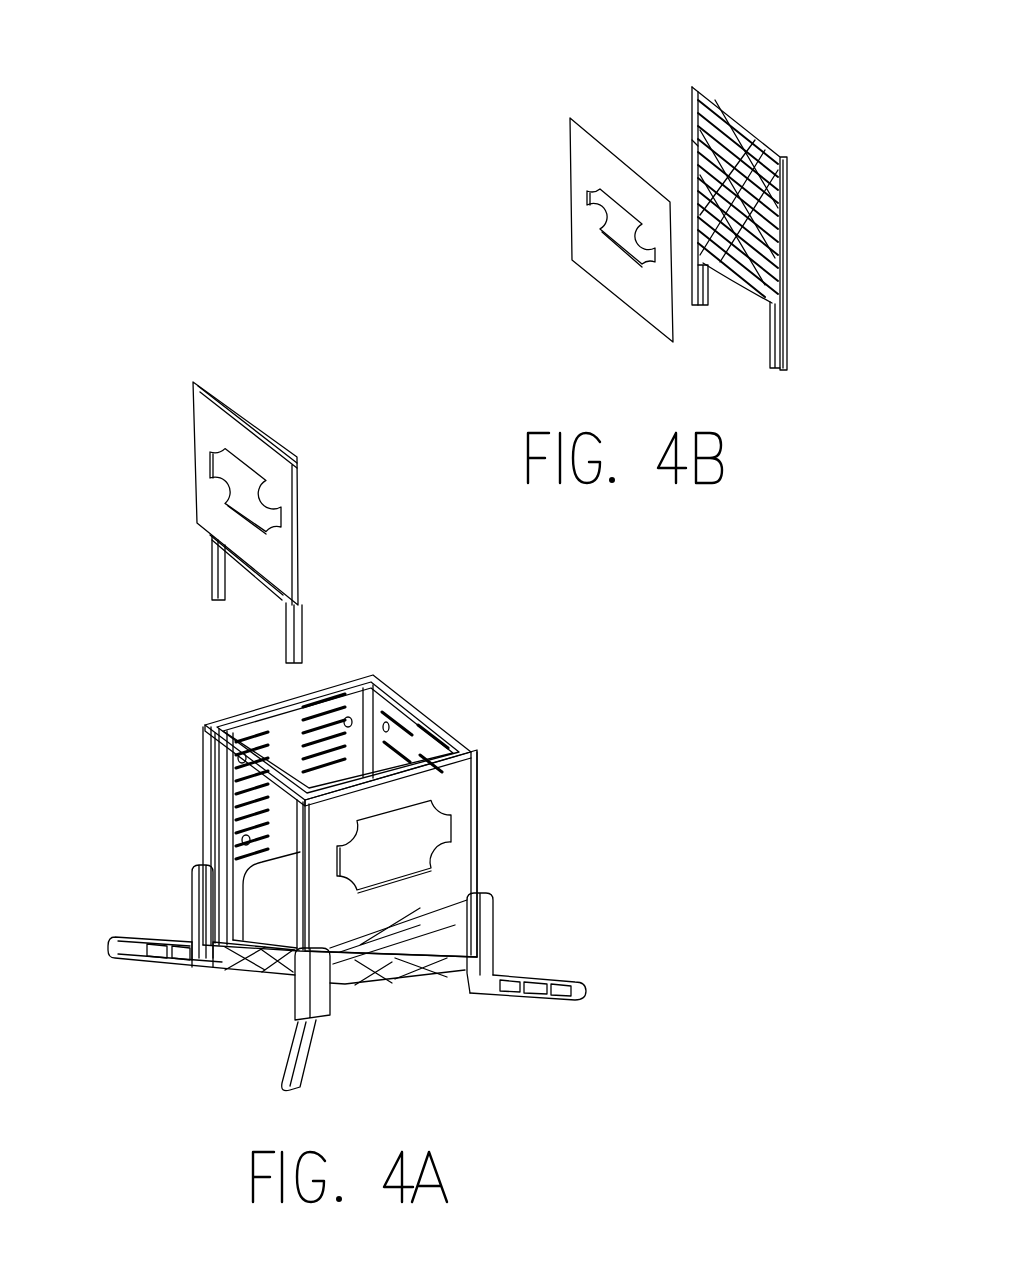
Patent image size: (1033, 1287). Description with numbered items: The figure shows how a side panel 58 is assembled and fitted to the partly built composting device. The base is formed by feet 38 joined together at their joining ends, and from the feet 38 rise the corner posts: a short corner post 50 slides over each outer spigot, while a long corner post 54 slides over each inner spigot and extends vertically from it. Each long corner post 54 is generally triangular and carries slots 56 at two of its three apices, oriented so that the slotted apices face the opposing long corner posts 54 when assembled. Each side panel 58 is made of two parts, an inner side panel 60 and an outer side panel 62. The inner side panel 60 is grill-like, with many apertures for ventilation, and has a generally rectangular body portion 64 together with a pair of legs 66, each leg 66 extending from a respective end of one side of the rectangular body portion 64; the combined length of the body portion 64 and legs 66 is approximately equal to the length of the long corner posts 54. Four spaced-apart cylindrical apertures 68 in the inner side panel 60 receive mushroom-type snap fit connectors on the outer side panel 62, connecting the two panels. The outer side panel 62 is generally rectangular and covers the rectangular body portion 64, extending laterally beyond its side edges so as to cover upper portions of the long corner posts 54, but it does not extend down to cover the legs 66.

In FIG. 4A, the foot 38 is at (157, 967).
In FIG. 4A, the short corner post 50 is at (190, 898).
In FIG. 4A, the long corner post 54 is at (207, 763).
In FIG. 4A, the slot 56 is at (217, 827).
In FIG. 4A, the side panel 58 is at (193, 456).
In FIG. 4B, the inner side panel 60 is at (684, 148).
In FIG. 4B, the outer side panel 62 is at (568, 182).
In FIG. 4B, the rectangular body portion 64 is at (729, 115).
In FIG. 4B, the leg 66 is at (712, 300).
In FIG. 4B, the cylindrical aperture 68 is at (781, 285).